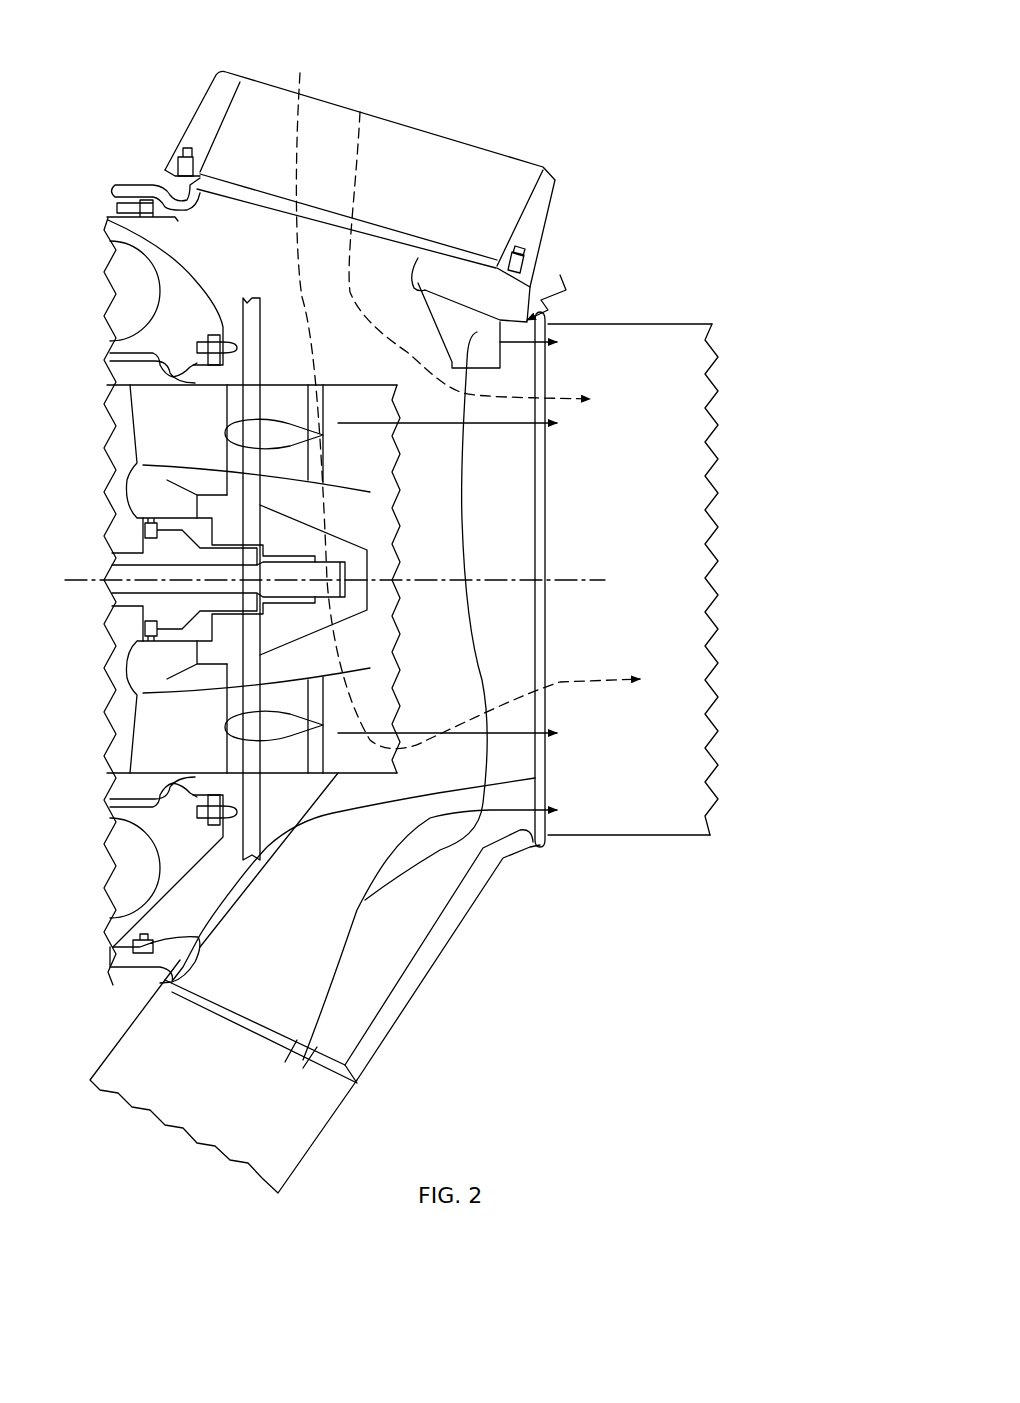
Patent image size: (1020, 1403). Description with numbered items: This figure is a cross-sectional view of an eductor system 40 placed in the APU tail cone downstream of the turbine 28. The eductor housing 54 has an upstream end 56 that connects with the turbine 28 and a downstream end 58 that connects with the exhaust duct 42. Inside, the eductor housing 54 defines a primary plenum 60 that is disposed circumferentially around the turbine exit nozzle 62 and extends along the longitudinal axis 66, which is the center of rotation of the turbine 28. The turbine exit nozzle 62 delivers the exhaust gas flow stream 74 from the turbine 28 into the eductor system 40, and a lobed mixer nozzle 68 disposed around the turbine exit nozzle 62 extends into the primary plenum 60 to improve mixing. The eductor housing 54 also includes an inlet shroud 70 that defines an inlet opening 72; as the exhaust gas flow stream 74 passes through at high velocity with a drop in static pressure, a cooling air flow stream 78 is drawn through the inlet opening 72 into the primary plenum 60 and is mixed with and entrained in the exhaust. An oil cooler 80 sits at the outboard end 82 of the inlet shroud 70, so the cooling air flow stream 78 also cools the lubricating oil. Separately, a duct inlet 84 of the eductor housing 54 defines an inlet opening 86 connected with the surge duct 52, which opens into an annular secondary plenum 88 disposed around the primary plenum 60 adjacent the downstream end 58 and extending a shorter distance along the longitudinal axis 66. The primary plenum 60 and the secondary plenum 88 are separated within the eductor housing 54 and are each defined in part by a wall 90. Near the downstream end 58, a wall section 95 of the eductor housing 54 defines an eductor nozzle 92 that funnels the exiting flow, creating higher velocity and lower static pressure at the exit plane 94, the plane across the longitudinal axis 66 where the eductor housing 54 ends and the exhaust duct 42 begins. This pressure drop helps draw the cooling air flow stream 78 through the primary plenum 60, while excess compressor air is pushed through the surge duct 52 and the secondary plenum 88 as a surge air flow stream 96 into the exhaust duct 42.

The eductor system 40 is at (530, 78).
The turbine 28 is at (180, 640).
The exhaust duct 42 is at (677, 837).
The surge duct 52 is at (117, 1040).
The eductor housing 54 is at (555, 285).
The upstream end 56 is at (120, 203).
The downstream end 58 is at (545, 325).
The primary plenum 60 is at (232, 208).
The turbine exit nozzle 62 is at (278, 467).
The longitudinal axis 66 is at (598, 578).
The mixer nozzle 68 is at (355, 770).
The inlet shroud 70 is at (433, 260).
The inlet opening 72 is at (417, 260).
The exhaust gas flow stream 74 is at (493, 427).
The cooling air flow stream 78 is at (573, 393).
The oil cooler 80 is at (258, 92).
The outboard end 82 is at (417, 258).
The duct inlet 84 is at (418, 972).
The inlet opening 86 is at (377, 1003).
The secondary plenum 88 is at (460, 337).
The wall 90 is at (430, 323).
The eductor nozzle 92 is at (397, 304).
The exit plane 94 is at (547, 627).
The wall section 95 is at (463, 293).
The surge air flow stream 96 is at (465, 527).